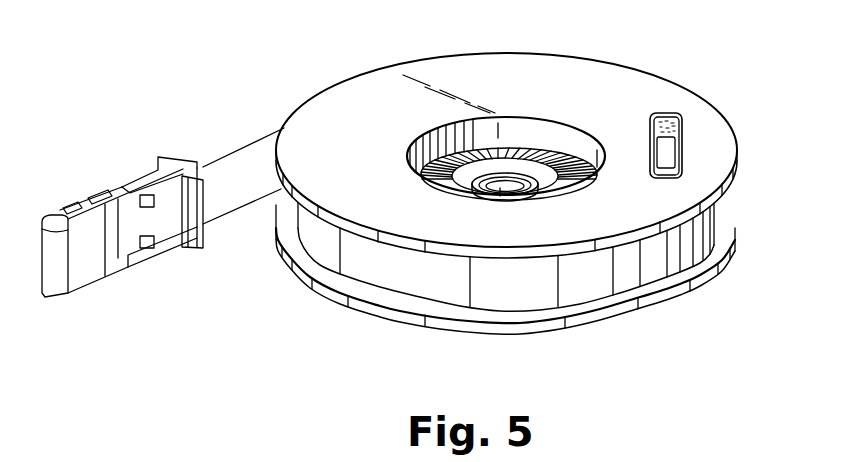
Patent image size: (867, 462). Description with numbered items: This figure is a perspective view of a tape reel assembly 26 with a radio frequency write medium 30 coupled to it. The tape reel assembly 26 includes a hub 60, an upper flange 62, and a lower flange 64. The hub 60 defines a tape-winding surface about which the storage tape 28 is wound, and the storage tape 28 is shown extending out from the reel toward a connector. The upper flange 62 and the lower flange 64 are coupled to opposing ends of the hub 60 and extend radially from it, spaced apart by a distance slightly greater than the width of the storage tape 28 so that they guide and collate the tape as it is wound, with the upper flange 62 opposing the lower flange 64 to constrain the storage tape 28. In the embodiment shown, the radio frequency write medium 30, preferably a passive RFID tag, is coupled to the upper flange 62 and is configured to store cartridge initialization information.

The tape reel assembly 26 is at (523, 204).
The storage tape 28 is at (237, 167).
The radio frequency write medium 30 is at (683, 121).
The hub 60 is at (552, 139).
The upper flange 62 is at (710, 140).
The lower flange 64 is at (731, 215).